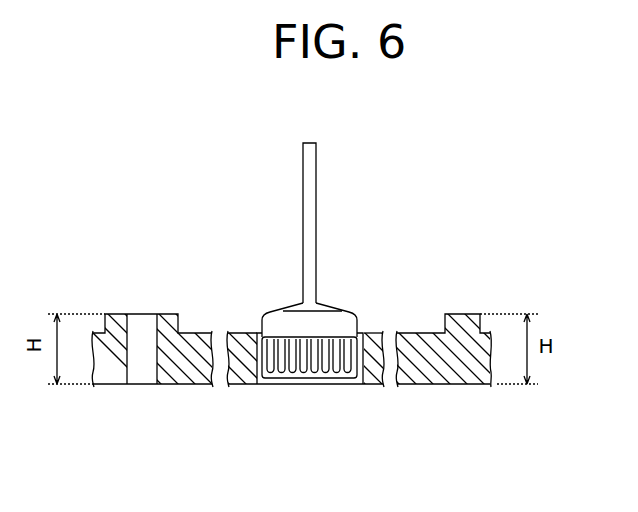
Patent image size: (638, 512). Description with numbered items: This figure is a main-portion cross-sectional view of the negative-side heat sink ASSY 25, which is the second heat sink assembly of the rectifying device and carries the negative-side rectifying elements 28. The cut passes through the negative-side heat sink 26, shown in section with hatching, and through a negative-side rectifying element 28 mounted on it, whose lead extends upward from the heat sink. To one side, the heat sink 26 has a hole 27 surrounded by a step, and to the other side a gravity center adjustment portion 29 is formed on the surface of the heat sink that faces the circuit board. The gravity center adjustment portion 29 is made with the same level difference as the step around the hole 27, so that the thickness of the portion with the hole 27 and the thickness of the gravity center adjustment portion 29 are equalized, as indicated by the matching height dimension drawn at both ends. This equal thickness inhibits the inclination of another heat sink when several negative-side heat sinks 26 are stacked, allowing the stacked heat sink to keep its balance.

The negative-side heat sink ASSY 25 is at (402, 221).
The negative-side heat sink 26 is at (367, 332).
The hole 27 is at (143, 322).
The negative-side rectifying element 28 is at (278, 384).
The gravity center adjustment portion 29 is at (465, 313).